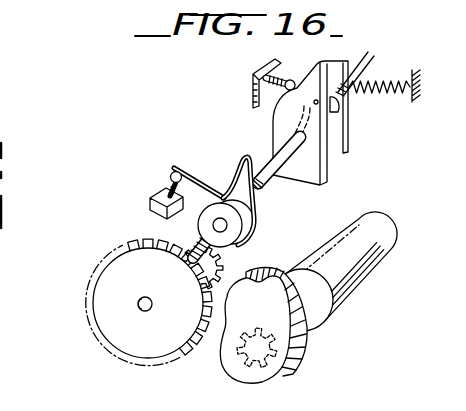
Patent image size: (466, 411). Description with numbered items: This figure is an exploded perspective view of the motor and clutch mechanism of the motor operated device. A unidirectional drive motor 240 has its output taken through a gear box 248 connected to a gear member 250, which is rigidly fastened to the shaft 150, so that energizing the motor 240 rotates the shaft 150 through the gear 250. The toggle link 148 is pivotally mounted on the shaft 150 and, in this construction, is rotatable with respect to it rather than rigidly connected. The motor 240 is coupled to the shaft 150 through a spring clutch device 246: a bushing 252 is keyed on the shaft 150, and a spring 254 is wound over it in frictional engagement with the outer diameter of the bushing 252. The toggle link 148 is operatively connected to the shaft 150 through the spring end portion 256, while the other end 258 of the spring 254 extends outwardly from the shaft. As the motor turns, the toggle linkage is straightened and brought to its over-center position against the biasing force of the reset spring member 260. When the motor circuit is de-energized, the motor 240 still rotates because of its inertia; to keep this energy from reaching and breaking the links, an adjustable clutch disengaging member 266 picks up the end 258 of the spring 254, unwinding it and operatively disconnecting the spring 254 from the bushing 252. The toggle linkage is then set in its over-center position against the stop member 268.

The toggle link 148 is at (351, 146).
The shaft 150 is at (208, 255).
The unidirectional drive motor 240 is at (378, 232).
The spring clutch device 246 is at (312, 198).
The gear box 248 is at (297, 368).
The gear member 250 is at (146, 338).
The bushing 252 is at (236, 238).
The spring 254 is at (257, 215).
The spring end portion 256 is at (230, 162).
The other end of spring 258 is at (177, 164).
The reset spring member 260 is at (368, 95).
The adjustable clutch disengaging member 266 is at (170, 176).
The stop member 268 is at (279, 86).